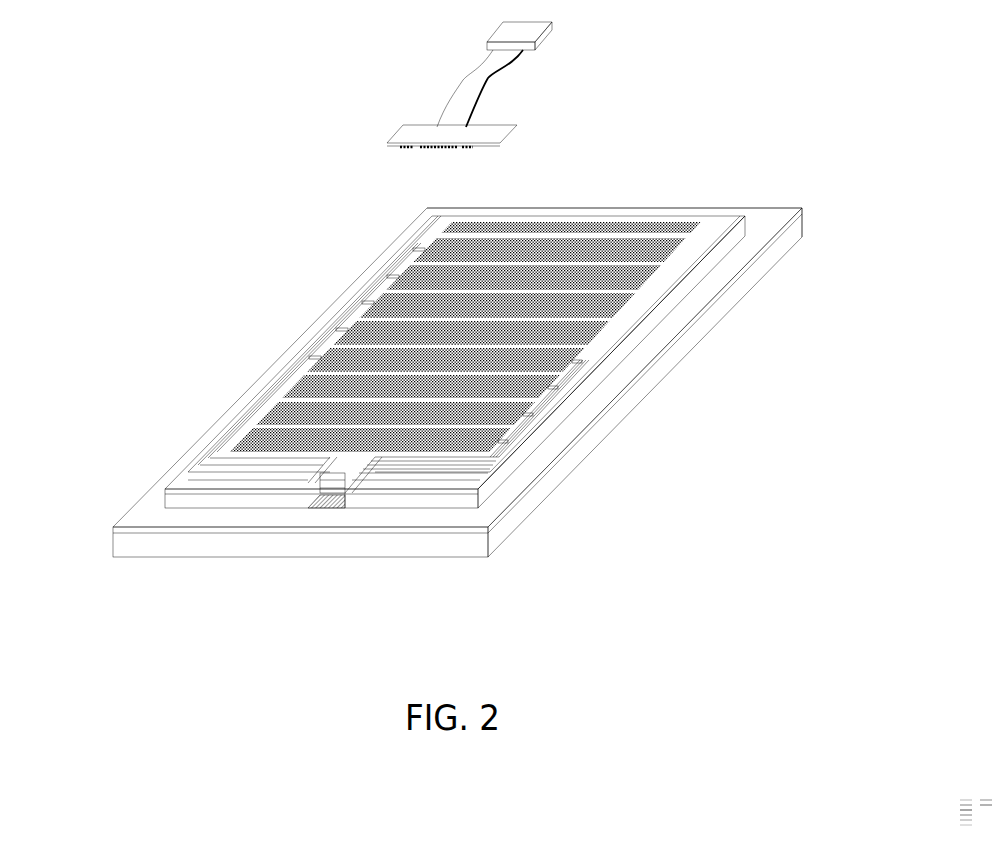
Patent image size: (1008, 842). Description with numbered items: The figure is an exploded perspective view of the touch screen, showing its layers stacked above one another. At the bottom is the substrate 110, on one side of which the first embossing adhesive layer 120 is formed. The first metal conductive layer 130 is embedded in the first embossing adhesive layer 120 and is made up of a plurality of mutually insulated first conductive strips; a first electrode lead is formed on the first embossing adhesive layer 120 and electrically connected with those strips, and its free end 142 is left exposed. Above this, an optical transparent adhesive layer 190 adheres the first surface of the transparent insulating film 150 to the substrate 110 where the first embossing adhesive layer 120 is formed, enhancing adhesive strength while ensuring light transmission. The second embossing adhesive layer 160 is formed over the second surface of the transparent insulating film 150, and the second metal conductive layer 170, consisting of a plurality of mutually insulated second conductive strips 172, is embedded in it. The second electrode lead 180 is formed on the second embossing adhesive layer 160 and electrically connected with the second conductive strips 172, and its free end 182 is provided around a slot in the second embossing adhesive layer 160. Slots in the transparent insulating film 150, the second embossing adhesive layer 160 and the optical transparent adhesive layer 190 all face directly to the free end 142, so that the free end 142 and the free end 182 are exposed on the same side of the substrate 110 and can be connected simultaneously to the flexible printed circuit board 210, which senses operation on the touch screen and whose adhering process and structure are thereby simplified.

The substrate 110 is at (127, 547).
The first embossing adhesive layer 120 is at (597, 417).
The first metal conductive layer 130 is at (247, 420).
The free end of the first electrode lead 142 is at (327, 502).
The transparent insulating film 150 is at (772, 253).
The second embossing adhesive layer 160 is at (680, 290).
The second metal conductive layer 170 is at (616, 229).
The second conductive strip 172 is at (377, 300).
The second electrode lead 180 is at (314, 349).
The free end of the second electrode lead 182 is at (363, 483).
The optical transparent adhesive layer 190 is at (802, 210).
The printed circuit board (FPCB) 210 is at (448, 53).